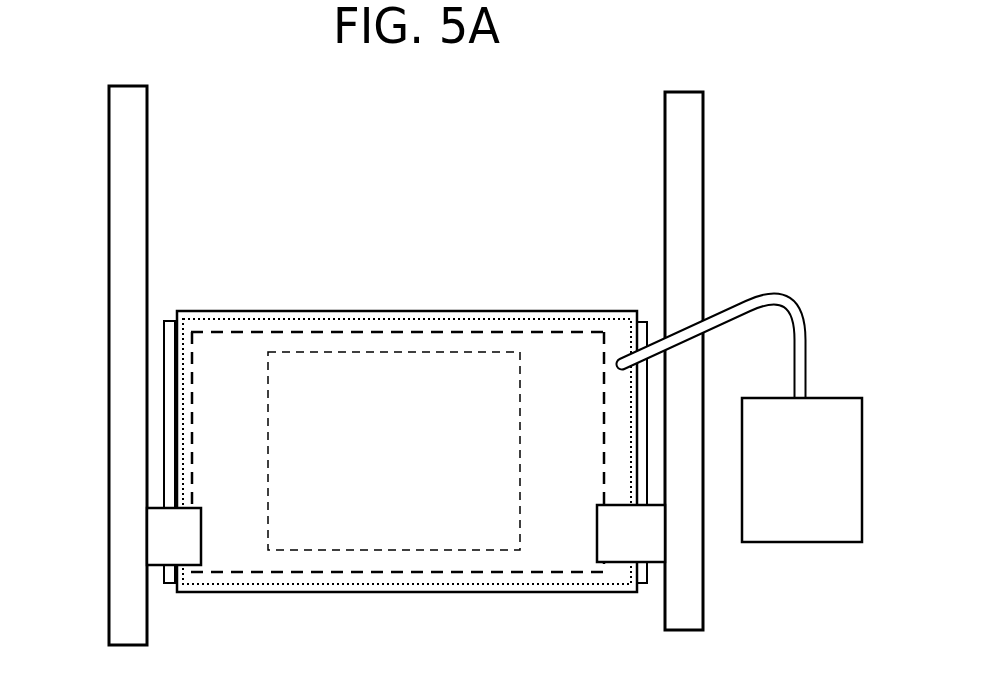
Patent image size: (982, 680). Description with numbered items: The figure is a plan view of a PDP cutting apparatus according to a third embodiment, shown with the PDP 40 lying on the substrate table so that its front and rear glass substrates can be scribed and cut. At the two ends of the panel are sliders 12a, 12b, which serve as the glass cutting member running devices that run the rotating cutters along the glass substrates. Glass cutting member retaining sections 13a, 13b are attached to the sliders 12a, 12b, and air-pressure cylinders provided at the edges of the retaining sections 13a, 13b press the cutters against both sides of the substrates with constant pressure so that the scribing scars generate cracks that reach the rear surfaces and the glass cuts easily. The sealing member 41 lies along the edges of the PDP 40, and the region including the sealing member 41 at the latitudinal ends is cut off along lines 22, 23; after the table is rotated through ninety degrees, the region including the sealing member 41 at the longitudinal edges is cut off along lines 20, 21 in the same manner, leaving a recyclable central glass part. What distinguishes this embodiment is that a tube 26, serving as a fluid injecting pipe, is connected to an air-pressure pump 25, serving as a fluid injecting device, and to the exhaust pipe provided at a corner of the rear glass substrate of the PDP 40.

The slider 12a is at (122, 532).
The slider 12b is at (688, 538).
The glass cutting member retaining section 13a is at (157, 550).
The glass cutting member retaining section 13b is at (652, 540).
The cutting line 20 is at (310, 572).
The cutting line 21 is at (310, 332).
The cutting line 22 is at (194, 360).
The cutting line 23 is at (603, 370).
The air-pressure pump 25 is at (833, 517).
The tube 26 is at (792, 312).
The PDP 40 is at (508, 311).
The sealing member 41 is at (173, 450).